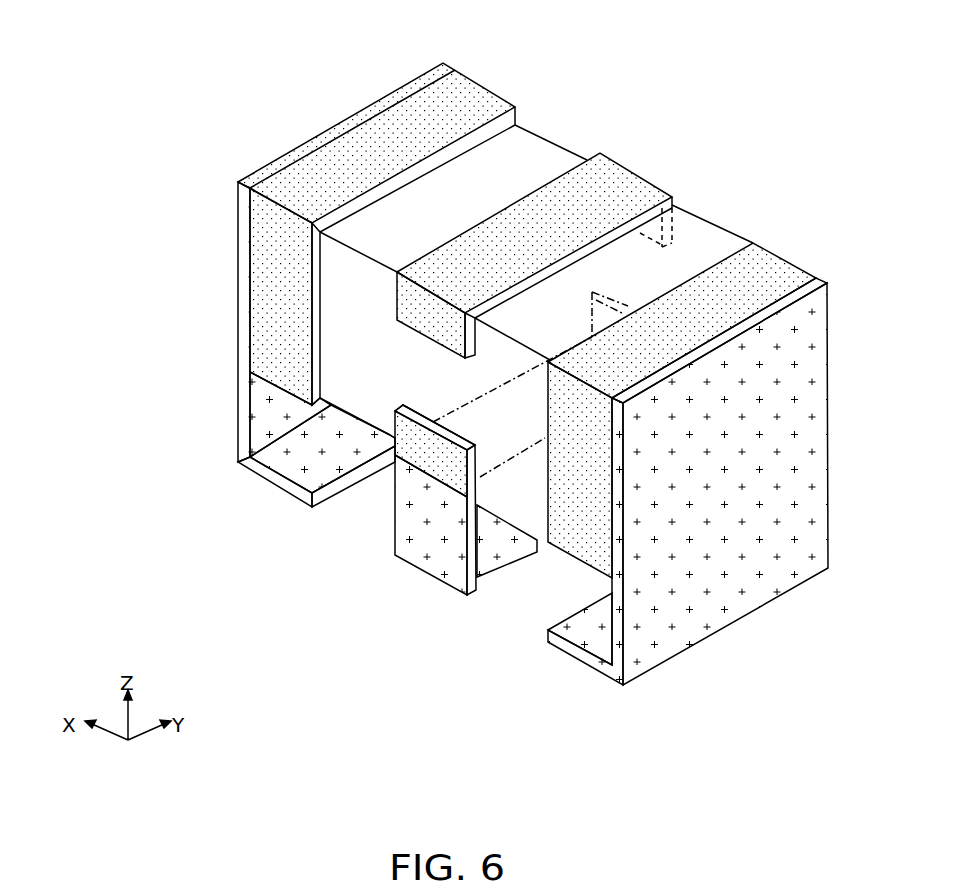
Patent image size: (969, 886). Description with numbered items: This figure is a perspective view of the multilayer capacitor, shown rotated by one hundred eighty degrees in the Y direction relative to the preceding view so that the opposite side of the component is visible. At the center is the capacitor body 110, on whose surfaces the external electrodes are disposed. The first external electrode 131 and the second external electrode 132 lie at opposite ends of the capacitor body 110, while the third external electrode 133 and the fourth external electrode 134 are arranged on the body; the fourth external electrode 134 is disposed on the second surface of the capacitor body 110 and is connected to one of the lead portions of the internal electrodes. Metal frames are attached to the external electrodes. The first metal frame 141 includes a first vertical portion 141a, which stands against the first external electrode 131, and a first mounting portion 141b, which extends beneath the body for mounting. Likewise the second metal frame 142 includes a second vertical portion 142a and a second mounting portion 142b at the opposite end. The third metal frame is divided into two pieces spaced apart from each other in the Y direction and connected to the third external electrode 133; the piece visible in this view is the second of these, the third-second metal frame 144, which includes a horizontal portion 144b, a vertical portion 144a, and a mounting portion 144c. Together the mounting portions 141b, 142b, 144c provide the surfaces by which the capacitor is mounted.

The capacitor body 110 is at (698, 243).
The first external electrode 131 is at (776, 276).
The second external electrode 132 is at (471, 100).
The third external electrode 133 is at (393, 440).
The fourth external electrode 134 is at (622, 190).
The first metal frame 141 is at (641, 533).
The first vertical portion 141a is at (650, 632).
The first mounting portion 141b is at (600, 633).
The second metal frame 142 is at (245, 377).
The second vertical portion 142a is at (240, 420).
The second mounting portion 142b is at (292, 467).
The 3-2nd metal frame 144 is at (392, 539).
The 3-2nd vertical portion 144a is at (432, 547).
The 3-2nd horizontal portion 144b is at (440, 470).
The 3-2nd mounting portion 144c is at (503, 542).